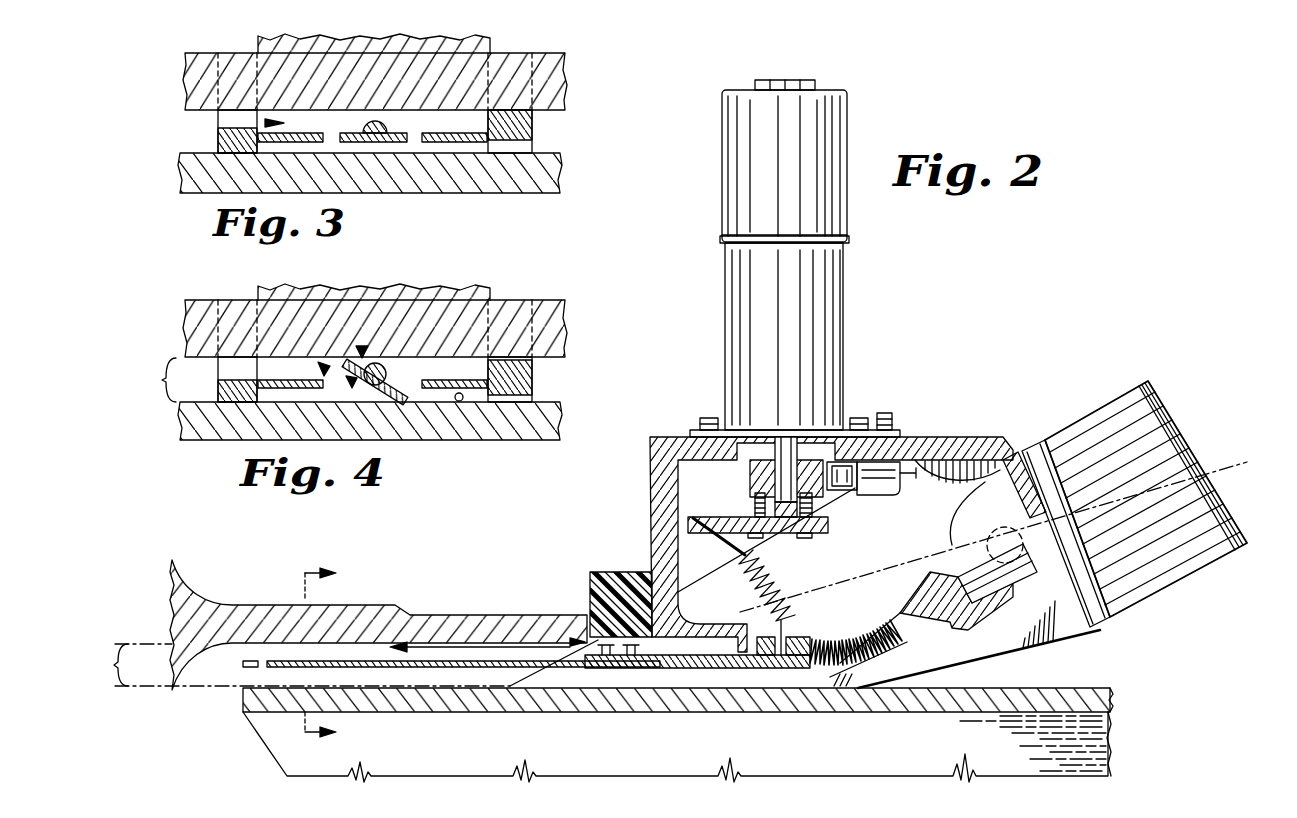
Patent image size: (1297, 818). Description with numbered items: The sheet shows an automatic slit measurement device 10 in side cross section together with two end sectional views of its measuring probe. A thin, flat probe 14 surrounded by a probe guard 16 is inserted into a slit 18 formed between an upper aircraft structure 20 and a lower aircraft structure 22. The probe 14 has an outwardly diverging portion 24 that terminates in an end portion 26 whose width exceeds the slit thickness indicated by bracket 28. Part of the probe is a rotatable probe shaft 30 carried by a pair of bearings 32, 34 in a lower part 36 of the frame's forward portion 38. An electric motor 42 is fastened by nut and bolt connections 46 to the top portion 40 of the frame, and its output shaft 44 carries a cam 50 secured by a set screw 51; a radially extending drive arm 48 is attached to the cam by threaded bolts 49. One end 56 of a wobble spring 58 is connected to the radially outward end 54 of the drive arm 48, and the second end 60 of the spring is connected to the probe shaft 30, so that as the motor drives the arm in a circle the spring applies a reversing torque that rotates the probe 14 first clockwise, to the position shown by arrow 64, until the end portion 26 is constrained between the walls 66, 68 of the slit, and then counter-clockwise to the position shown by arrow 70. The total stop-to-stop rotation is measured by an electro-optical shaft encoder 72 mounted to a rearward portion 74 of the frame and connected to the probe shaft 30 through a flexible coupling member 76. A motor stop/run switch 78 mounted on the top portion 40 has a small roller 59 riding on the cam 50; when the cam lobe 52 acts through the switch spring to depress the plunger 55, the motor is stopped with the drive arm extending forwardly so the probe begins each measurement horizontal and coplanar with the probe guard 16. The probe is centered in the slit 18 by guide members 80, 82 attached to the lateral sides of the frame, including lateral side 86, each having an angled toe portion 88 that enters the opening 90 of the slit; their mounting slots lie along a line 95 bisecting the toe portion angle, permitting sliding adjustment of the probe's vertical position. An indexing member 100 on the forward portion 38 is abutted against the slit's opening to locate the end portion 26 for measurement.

In FIG. 2, the automatic slit measurement device 10 is at (1001, 309).
In FIG. 3, the probe 14 is at (395, 142).
In FIG. 2, the probe 14 is at (447, 663).
In FIG. 3, the probe guard 16 is at (466, 130).
In FIG. 4, the probe guard 16 is at (465, 378).
In FIG. 2, the probe guard 16 is at (255, 660).
In FIG. 3, the slit 18 is at (250, 118).
In FIG. 4, the slit 18 is at (322, 367).
In FIG. 2, the slit 18 is at (443, 660).
In FIG. 3, the upper aircraft structure 20 is at (278, 83).
In FIG. 4, the upper aircraft structure 20 is at (523, 322).
In FIG. 2, the upper aircraft structure 20 is at (477, 627).
In FIG. 3, the lower aircraft structure 22 is at (222, 182).
In FIG. 4, the lower aircraft structure 22 is at (370, 421).
In FIG. 2, the lower aircraft structure 22 is at (433, 700).
In FIG. 2, the outwardly diverging portion 24 is at (343, 657).
In FIG. 3, the end portion 26 is at (372, 143).
In FIG. 4, the end portion 26 is at (400, 395).
In FIG. 2, the end portion 26 is at (340, 655).
In FIG. 4, the slit thickness bracket 28 is at (147, 380).
In FIG. 2, the slit thickness bracket 28 is at (333, 663).
In FIG. 4, the rotatable probe shaft 30 is at (380, 362).
In FIG. 2, the rotatable probe shaft 30 is at (698, 668).
In FIG. 2, the bearing 32 is at (660, 665).
In FIG. 2, the bearing 34 is at (743, 667).
In FIG. 2, the lower part of forward portion 36 is at (750, 665).
In FIG. 2, the forward portion 38 is at (650, 470).
In FIG. 2, the top portion 40 is at (895, 437).
In FIG. 2, the electric motor 42 is at (847, 137).
In FIG. 2, the output shaft 44 is at (788, 440).
In FIG. 2, the nut and bolt connections 46 is at (707, 418).
In FIG. 2, the drive arm 48 is at (752, 490).
In FIG. 2, the threaded bolts 49 is at (828, 528).
In FIG. 2, the cam 50 is at (750, 480).
In FIG. 2, the set screw 51 is at (750, 465).
In FIG. 2, the cam lobe 52 is at (840, 492).
In FIG. 2, the radially outward end 54 is at (690, 525).
In FIG. 2, the plunger 55 is at (880, 462).
In FIG. 2, the first end of wobble spring 56 is at (705, 528).
In FIG. 2, the wobble spring 58 is at (778, 576).
In FIG. 2, the roller 59 is at (887, 418).
In FIG. 2, the second end of wobble spring 60 is at (812, 640).
In FIG. 4, the arrow 64 is at (364, 350).
In FIG. 4, the slit wall 66 is at (484, 380).
In FIG. 4, the slit wall 68 is at (460, 401).
In FIG. 4, the arrow 70 is at (333, 355).
In FIG. 2, the electro-optical shaft encoder 72 is at (1162, 404).
In FIG. 2, the rearward portion 74 is at (1050, 472).
In FIG. 2, the flexible coupling member 76 is at (920, 673).
In FIG. 2, the motor stop/run switch 78 is at (915, 474).
In FIG. 3, the guide member 80 is at (185, 77).
In FIG. 4, the guide member 80 is at (185, 335).
In FIG. 3, the guide member 82 is at (565, 68).
In FIG. 4, the guide member 82 is at (565, 325).
In FIG. 2, the guide member 82 is at (1190, 580).
In FIG. 2, the lateral side 86 is at (1015, 450).
In FIG. 3, the angled toe portion 88 is at (218, 140).
In FIG. 4, the angled toe portion 88 is at (532, 382).
In FIG. 2, the angled toe portion 88 is at (512, 683).
In FIG. 2, the slit opening 90 is at (578, 655).
In FIG. 2, the bisector line 95 is at (1018, 438).
In FIG. 2, the indexing member 100 is at (590, 590).